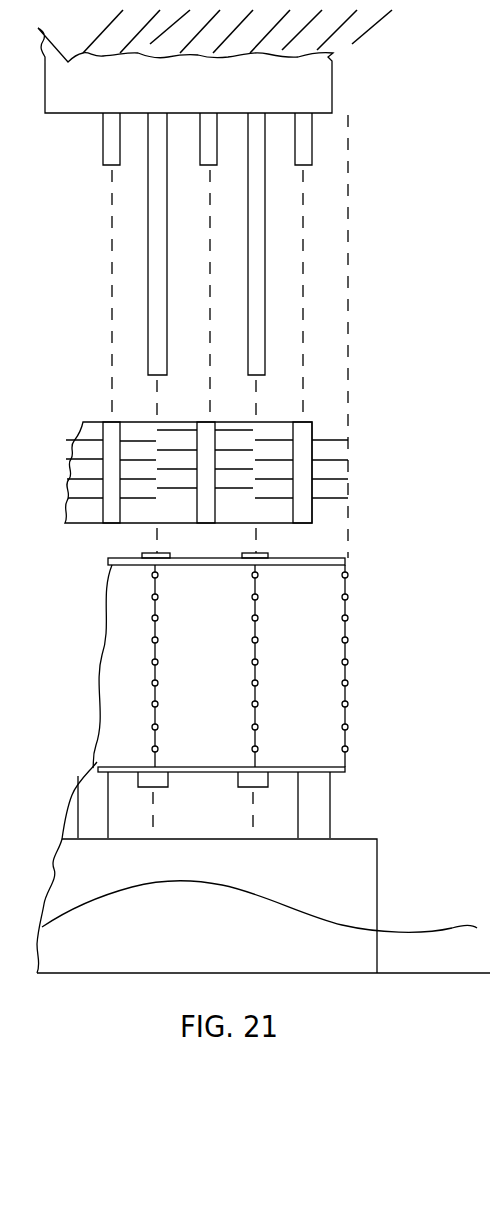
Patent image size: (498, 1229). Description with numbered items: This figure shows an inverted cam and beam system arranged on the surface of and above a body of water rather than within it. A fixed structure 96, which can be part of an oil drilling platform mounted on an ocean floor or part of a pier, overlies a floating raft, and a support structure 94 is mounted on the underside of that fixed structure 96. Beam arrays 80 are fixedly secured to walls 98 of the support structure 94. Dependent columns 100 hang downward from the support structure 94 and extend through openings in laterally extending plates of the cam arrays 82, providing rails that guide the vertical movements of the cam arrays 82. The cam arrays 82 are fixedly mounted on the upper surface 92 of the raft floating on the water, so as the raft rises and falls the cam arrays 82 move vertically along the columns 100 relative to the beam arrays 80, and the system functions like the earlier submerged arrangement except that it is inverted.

The fixed structure 96 is at (353, 42).
The support structure 94 is at (337, 97).
The walls 98 is at (303, 151).
The dependent columns 100 is at (153, 250).
The beam arrays 80 is at (92, 438).
The cam arrays 82 is at (348, 683).
The upper surface 92 is at (343, 838).